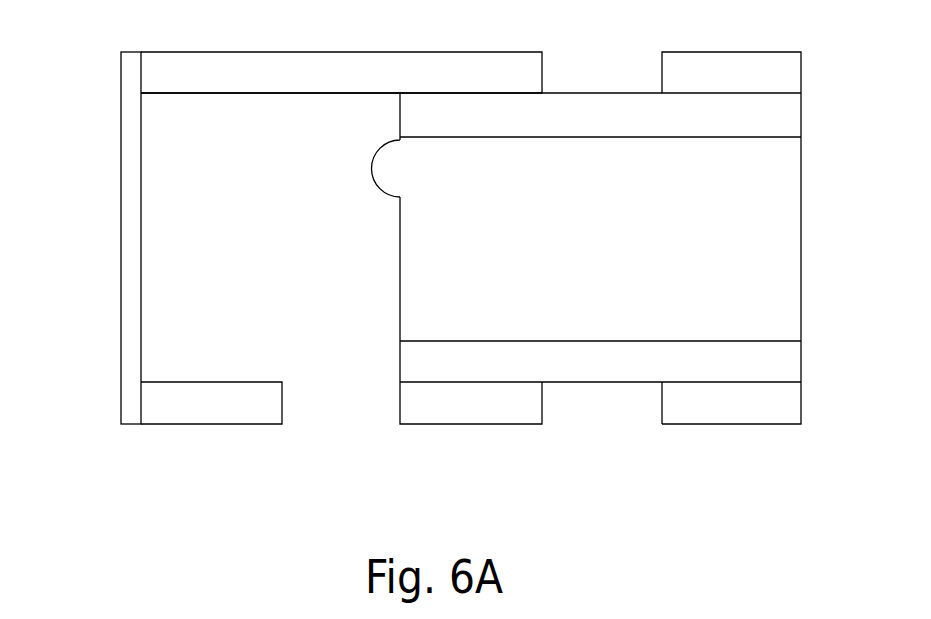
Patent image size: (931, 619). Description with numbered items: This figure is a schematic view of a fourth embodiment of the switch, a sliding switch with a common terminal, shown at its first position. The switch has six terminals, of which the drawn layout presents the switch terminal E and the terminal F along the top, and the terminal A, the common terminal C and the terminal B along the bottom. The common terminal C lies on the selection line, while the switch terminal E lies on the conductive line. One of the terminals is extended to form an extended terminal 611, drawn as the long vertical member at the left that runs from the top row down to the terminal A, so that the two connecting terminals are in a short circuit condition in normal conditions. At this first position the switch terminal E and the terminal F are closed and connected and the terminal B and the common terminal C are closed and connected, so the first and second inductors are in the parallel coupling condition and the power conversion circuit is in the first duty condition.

The extended terminal 611 is at (127, 226).
The switch terminal E is at (341, 59).
The terminal F is at (731, 59).
The terminal A is at (211, 422).
The common terminal C is at (471, 422).
The terminal B is at (731, 422).